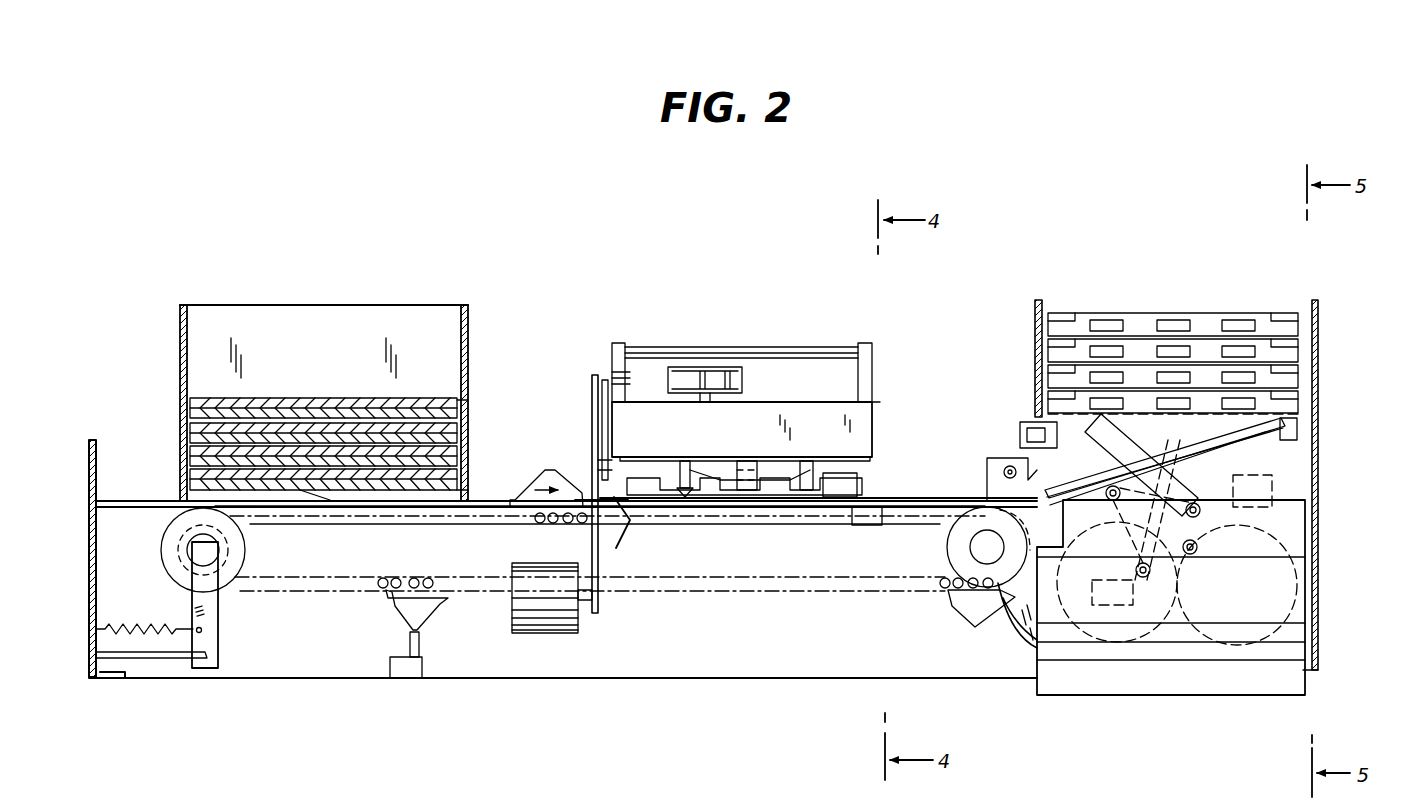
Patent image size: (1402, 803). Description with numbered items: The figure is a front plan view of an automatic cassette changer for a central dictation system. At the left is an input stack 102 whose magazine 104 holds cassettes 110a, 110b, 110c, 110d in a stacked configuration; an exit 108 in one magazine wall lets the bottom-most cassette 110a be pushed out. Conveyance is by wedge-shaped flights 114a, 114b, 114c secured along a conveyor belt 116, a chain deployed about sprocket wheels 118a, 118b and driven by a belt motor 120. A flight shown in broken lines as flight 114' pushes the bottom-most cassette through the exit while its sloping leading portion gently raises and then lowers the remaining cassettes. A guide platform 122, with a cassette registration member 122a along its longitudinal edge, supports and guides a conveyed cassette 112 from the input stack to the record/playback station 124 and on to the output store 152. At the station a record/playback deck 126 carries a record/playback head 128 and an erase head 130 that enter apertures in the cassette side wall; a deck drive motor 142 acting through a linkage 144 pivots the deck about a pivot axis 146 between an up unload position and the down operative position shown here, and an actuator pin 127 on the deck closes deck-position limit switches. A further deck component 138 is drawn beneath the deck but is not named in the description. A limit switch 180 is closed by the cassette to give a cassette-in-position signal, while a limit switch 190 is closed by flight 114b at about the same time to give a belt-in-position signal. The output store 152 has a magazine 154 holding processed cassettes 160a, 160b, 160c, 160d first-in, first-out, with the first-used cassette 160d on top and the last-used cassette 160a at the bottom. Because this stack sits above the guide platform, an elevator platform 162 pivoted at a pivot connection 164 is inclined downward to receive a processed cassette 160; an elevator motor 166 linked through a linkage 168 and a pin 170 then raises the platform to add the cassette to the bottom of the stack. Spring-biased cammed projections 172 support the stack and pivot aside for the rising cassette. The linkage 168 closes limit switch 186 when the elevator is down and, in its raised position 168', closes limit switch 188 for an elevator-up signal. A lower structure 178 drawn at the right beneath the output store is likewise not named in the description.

The input stack 102 is at (320, 266).
The magazine 104 is at (470, 320).
The exit 108 is at (470, 490).
The cassette 110a is at (190, 482).
The cassette 110b is at (190, 457).
The cassette 110c is at (190, 433).
The cassette 110d is at (190, 408).
The cassette 112 is at (858, 487).
The flight 114a is at (548, 470).
The flight 114b is at (420, 606).
The flight 114c is at (948, 612).
The flight 114' is at (340, 519).
The conveyor belt 116 is at (697, 592).
The sprocket wheel 118a is at (950, 552).
The sprocket wheel 118b is at (240, 548).
The belt motor 120 is at (985, 648).
The guide platform 122 is at (950, 495).
The cassette registration member 122a is at (744, 497).
The record/playback station 124 is at (888, 446).
The record/playback deck 126 is at (643, 412).
The actuator pin 127 is at (622, 532).
The record/playback head 128 is at (747, 460).
The erase head 130 is at (806, 460).
The pin 138 is at (687, 495).
The deck drive motor 142 is at (555, 633).
The linkage 144 is at (598, 568).
The pivot axis 146 is at (603, 445).
The output store 152 is at (1258, 261).
The magazine 154 is at (1036, 316).
The processed cassette 160 is at (1095, 458).
The cassette 160a is at (1287, 405).
The cassette 160b is at (1292, 378).
The cassette 160c is at (1287, 350).
The cassette 160d is at (1292, 312).
The elevator platform 162 is at (1248, 436).
The pivot connection 164 is at (1300, 436).
The elevator motor 166 is at (1280, 548).
The linkage 168 is at (1136, 531).
The linkage position 168' is at (1165, 462).
The pin 170 is at (1183, 508).
The projections 172 is at (1035, 424).
The base housing 178 is at (1305, 682).
The limit switch 180 is at (870, 525).
The limit switch 186 is at (1133, 600).
The limit switch 188 is at (1272, 505).
The limit switch 190 is at (390, 665).